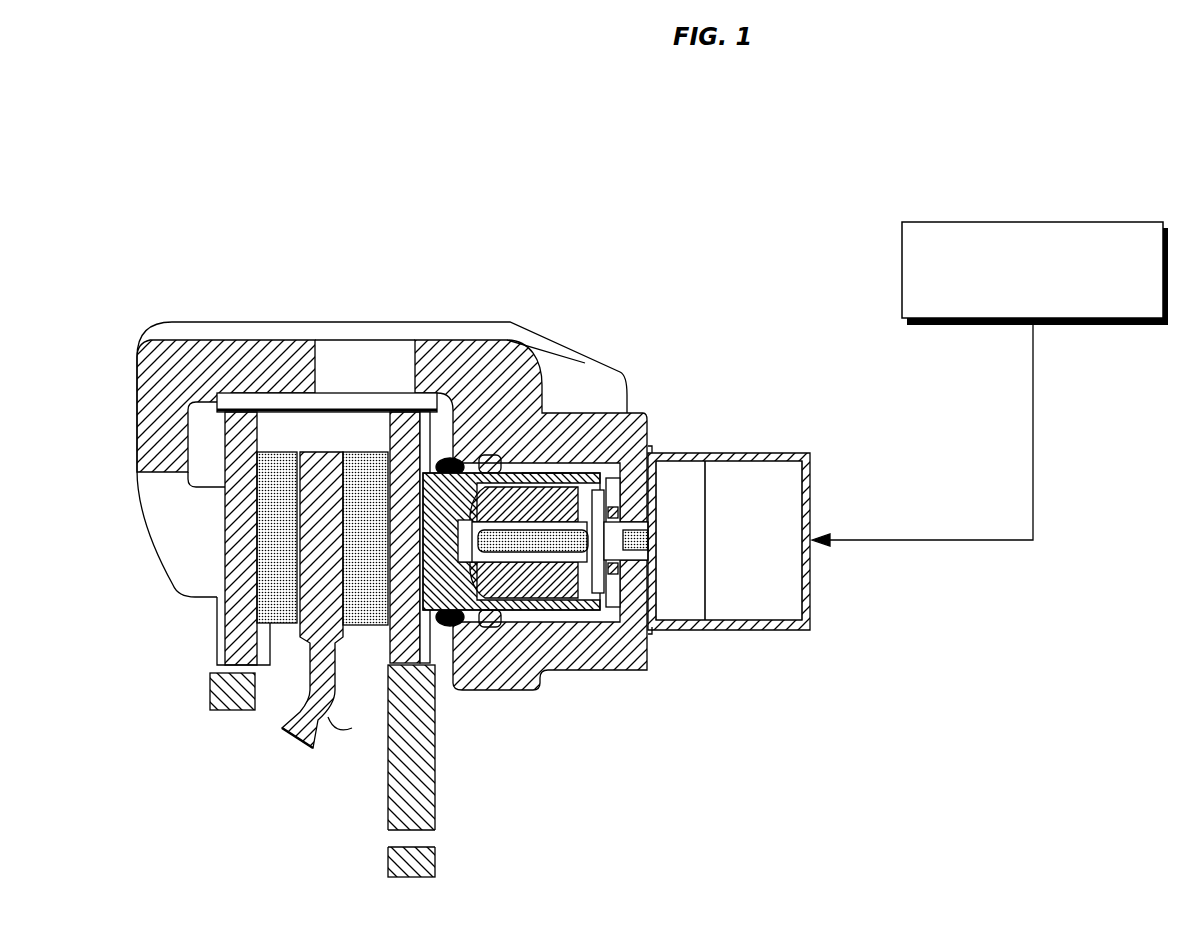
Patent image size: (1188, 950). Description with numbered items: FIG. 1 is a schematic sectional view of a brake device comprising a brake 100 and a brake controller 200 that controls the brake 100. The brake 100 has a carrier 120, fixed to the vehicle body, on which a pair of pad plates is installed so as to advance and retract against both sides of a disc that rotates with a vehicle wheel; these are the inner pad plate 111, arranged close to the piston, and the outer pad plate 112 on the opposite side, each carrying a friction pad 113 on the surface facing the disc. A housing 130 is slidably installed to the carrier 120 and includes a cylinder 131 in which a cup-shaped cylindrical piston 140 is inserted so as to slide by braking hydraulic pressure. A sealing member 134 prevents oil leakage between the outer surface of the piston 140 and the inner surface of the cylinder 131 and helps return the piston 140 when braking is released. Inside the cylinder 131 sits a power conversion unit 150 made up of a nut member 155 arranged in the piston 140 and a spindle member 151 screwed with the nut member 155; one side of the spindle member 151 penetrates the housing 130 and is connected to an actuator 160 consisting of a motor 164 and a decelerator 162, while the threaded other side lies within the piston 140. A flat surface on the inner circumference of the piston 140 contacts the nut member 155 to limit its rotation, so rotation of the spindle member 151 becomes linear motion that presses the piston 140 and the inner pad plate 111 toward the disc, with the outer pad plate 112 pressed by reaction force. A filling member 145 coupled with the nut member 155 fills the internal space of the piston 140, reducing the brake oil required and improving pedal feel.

The brake 100 is at (630, 340).
The inner pad plate 111 is at (387, 663).
The outer pad plate 112 is at (240, 643).
The friction pad 113 is at (265, 609).
The carrier 120 is at (388, 793).
The housing 130 is at (497, 333).
The cylinder 131 is at (598, 640).
The sealing member 134 is at (488, 627).
The piston 140 is at (540, 476).
The filling member 145 is at (556, 476).
The power conversion unit 150 is at (567, 725).
The spindle member 151 is at (556, 565).
The nut member 155 is at (512, 562).
The actuator 160 is at (775, 703).
The decelerator 162 is at (688, 607).
The motor 164 is at (774, 607).
The brake controller 200 is at (902, 250).